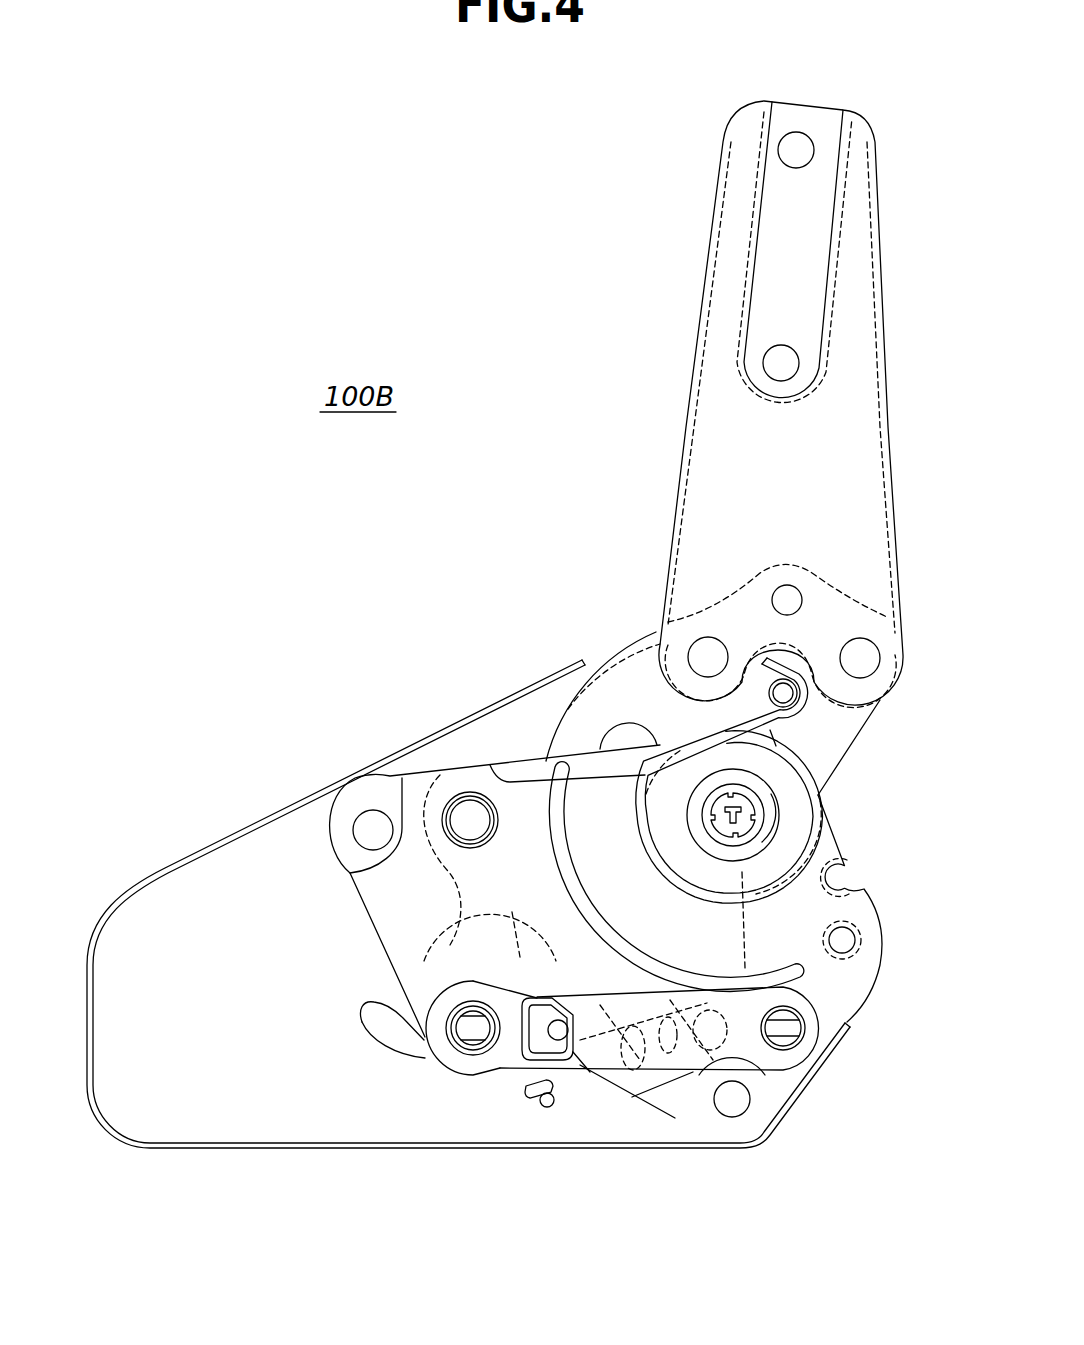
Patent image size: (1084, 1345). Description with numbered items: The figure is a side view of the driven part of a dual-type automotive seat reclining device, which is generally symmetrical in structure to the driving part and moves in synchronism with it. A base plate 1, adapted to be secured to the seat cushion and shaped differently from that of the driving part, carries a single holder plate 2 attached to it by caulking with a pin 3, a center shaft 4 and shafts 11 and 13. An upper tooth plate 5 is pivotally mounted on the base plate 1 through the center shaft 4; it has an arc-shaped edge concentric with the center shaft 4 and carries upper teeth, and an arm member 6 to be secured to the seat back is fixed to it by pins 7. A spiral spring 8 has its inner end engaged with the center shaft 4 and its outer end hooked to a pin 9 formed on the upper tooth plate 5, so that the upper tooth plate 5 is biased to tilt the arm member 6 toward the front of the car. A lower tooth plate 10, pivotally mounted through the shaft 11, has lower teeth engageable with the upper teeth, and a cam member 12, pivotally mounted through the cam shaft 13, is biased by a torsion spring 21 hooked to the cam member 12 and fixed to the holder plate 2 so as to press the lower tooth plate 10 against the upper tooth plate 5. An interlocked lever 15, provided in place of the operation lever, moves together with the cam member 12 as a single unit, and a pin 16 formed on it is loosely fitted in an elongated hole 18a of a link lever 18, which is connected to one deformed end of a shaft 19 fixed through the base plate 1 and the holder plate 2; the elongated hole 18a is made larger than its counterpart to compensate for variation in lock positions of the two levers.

The base plate 1 is at (267, 847).
The holder plate 2 is at (520, 757).
The pin 3 is at (373, 827).
The center shaft 4 is at (748, 800).
The upper tooth plate 5 is at (628, 672).
The arm member 6 is at (862, 355).
The pin 7 is at (708, 647).
The spiral spring 8 is at (806, 851).
The pin 9 is at (792, 697).
The lower tooth plate 10 is at (470, 923).
The shaft 11 is at (470, 807).
The cam member 12 is at (380, 1192).
The cam shaft 13 is at (457, 1047).
The interlocked lever 15 is at (500, 1063).
The pin 16 is at (557, 1040).
The link lever 18 is at (712, 916).
The elongated hole 18a is at (600, 945).
The shaft 19 is at (800, 1032).
The torsion spring 21 is at (577, 1073).